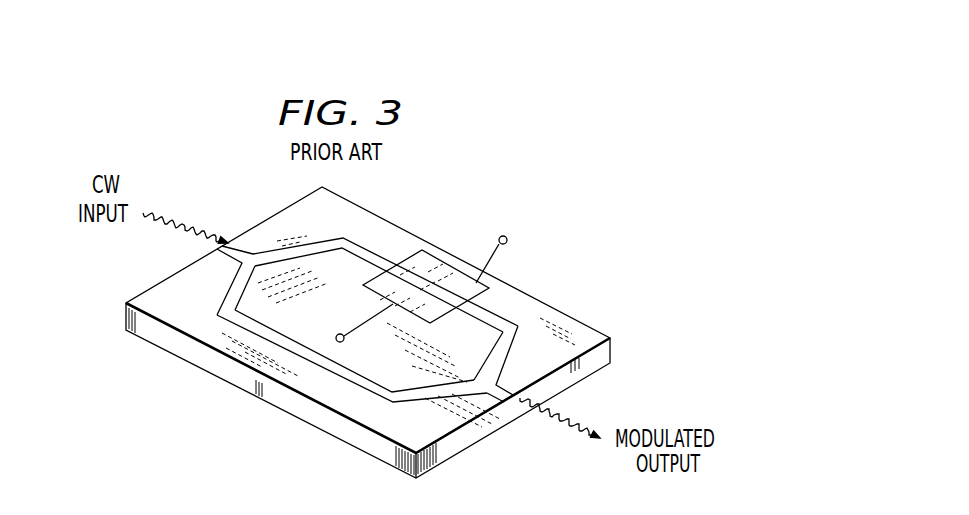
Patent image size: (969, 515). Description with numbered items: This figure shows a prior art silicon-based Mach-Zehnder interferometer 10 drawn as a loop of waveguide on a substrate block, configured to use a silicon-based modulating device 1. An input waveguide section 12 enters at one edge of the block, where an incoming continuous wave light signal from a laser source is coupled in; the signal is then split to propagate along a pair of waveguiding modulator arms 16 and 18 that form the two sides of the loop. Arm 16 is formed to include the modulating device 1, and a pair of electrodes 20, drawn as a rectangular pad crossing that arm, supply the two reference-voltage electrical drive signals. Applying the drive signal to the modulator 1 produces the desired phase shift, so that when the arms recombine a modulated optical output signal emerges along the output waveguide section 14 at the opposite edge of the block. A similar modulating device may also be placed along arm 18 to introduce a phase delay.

The silicon-based Mach-Zehnder interferometer 10 is at (625, 225).
The input waveguide section 12 is at (235, 252).
The output waveguide section 14 is at (505, 390).
The waveguiding modulator arm 16 is at (327, 240).
The waveguiding modulator arm 18 is at (352, 376).
The electrodes 20 is at (367, 283).
The silicon-based modulating device 1 is at (478, 284).